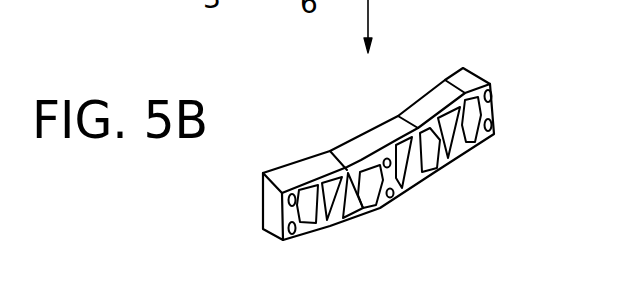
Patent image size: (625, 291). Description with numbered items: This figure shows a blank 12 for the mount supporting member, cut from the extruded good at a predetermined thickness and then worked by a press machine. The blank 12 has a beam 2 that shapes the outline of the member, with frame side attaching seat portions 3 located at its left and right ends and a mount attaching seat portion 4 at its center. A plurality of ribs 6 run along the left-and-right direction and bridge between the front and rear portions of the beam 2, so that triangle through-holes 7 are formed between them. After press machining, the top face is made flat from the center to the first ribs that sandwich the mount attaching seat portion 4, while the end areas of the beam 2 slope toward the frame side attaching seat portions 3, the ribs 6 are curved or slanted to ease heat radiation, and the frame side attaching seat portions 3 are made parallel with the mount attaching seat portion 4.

The beam 2 is at (361, 159).
The frame side attaching seat portion 3 is at (264, 228).
The mount attaching seat portion 4 is at (393, 152).
The rib 6 is at (344, 219).
The triangle through-hole 7 is at (310, 186).
The blank 12 is at (482, 72).